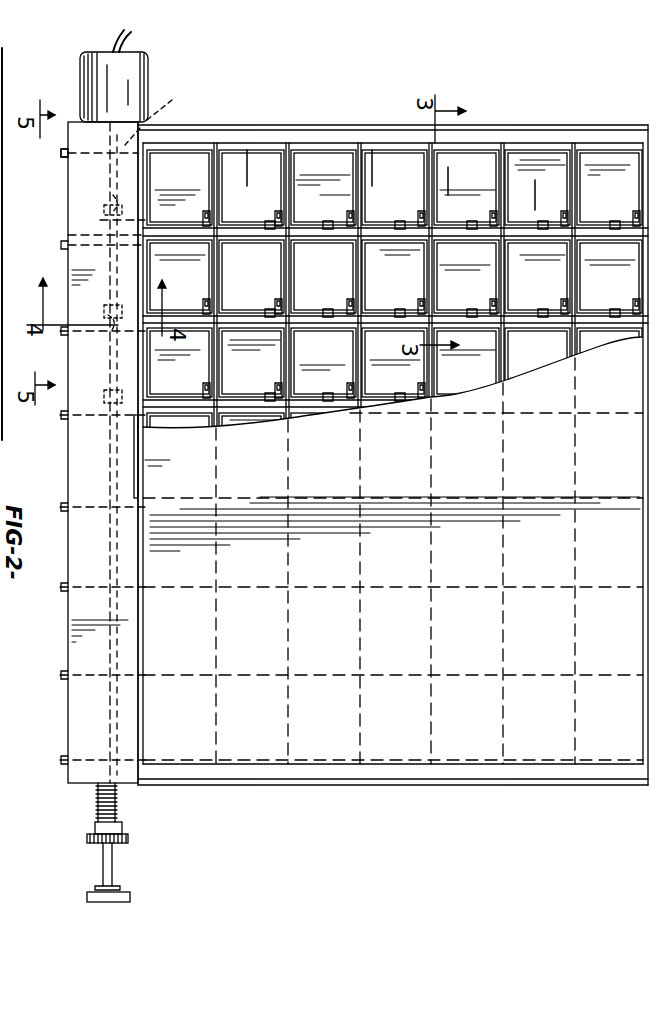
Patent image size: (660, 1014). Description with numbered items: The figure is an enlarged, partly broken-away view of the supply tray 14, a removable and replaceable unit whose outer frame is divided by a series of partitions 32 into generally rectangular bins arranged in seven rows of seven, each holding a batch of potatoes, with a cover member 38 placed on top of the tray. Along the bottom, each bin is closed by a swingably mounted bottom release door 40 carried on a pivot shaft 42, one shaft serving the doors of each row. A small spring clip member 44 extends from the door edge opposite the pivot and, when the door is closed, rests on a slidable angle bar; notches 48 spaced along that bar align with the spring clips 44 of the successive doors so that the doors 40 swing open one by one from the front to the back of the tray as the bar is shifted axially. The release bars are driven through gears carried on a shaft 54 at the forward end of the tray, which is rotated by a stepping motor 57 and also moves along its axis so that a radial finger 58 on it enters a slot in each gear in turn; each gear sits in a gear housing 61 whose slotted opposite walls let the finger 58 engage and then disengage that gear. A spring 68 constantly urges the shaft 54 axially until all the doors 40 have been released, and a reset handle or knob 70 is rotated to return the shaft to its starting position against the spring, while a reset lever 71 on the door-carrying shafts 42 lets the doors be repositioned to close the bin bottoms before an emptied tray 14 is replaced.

The supply tray 14 is at (382, 788).
The partitions 32 is at (236, 237).
The cover member 38 is at (63, 243).
The bottom release doors 40 is at (394, 303).
The pivot shaft 42 is at (157, 108).
The spring clip member 44 is at (204, 220).
The notches 48 is at (268, 220).
The shaft 54 is at (66, 440).
The stepping motor 57 is at (96, 106).
The radial finger 58 is at (110, 200).
The gear housing 61 is at (102, 210).
The spring 68 is at (114, 803).
The reset handle or knob 70 is at (90, 836).
The reset lever 71 is at (62, 156).